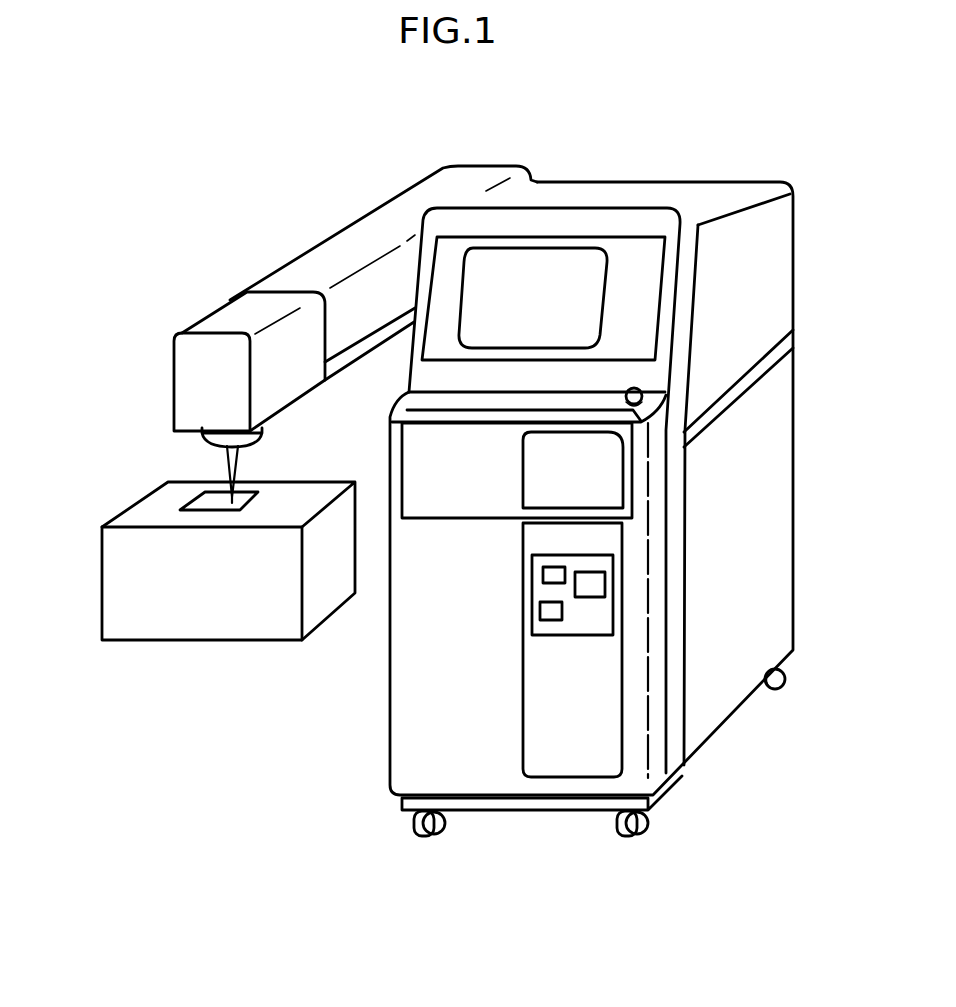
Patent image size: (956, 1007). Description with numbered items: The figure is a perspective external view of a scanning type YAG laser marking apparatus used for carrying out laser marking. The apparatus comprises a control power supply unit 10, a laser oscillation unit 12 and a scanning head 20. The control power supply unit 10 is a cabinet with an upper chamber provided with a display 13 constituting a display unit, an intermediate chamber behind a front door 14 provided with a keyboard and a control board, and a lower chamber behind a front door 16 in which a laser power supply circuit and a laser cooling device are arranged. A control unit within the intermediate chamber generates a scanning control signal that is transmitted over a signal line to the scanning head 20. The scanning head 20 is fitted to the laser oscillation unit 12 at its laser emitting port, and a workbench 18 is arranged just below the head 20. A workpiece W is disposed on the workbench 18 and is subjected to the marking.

The control power supply unit 10 is at (777, 485).
The laser oscillation unit 12 is at (305, 267).
The display 13 is at (565, 268).
The front door 14 is at (415, 458).
The front door 16 is at (413, 752).
The workbench 18 is at (123, 514).
The scanning head 20 is at (212, 318).
The workpiece W is at (205, 505).